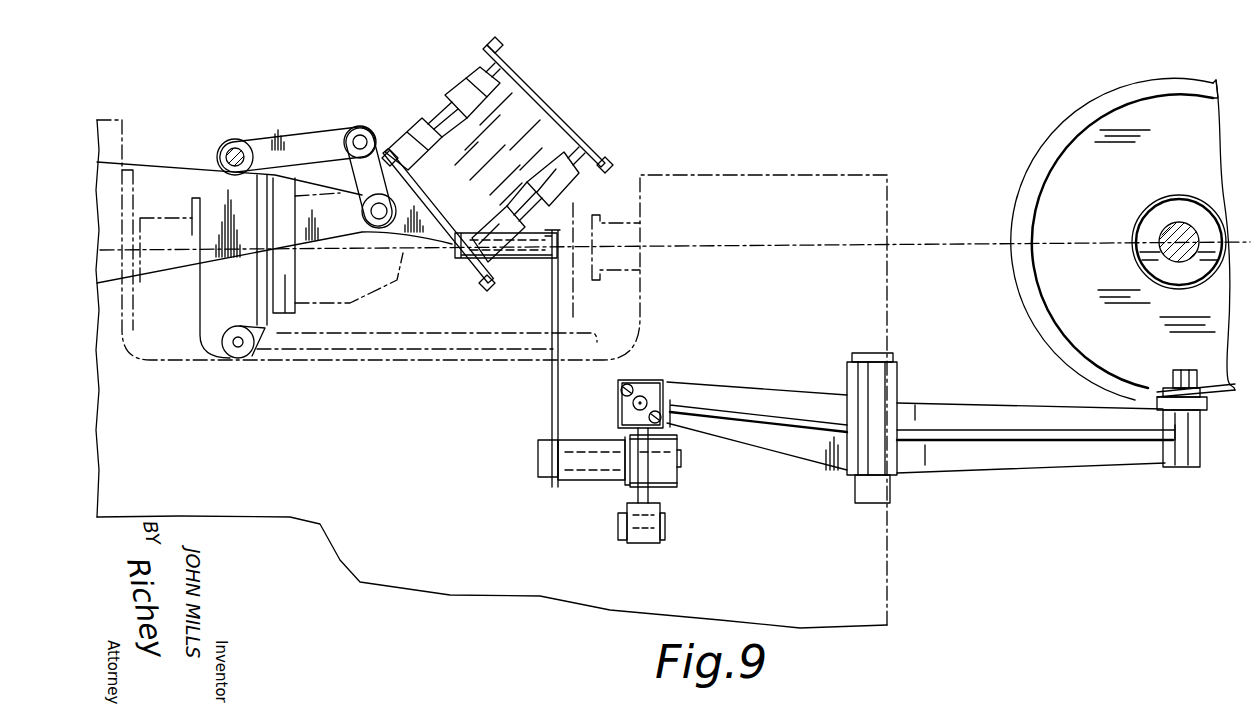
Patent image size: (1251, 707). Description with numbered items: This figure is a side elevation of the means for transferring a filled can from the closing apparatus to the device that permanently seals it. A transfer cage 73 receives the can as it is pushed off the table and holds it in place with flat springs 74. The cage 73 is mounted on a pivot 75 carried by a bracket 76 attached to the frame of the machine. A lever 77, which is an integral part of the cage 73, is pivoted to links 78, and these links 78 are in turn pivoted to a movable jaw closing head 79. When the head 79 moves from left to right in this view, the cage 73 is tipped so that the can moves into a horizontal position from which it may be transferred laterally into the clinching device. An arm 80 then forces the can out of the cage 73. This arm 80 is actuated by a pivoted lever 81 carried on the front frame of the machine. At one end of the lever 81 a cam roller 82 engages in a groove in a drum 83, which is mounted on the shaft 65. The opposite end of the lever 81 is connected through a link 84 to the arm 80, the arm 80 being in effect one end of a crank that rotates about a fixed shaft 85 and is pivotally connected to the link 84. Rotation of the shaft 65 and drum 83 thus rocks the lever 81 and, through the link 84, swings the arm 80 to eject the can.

The shaft 65 is at (1174, 231).
The transfer cage 73 is at (426, 237).
The flat springs 74 is at (482, 88).
The pivot 75 is at (377, 229).
The bracket 76 is at (170, 190).
The lever 77 is at (362, 172).
The links 78 is at (295, 142).
The movable jaw closing head 79 is at (205, 152).
The arm 80 is at (550, 427).
The pivoted lever 81 is at (1003, 440).
The cam roller 82 is at (1175, 392).
The drum 83 is at (1135, 92).
The link 84 is at (655, 505).
The fixed shaft 85 is at (678, 450).